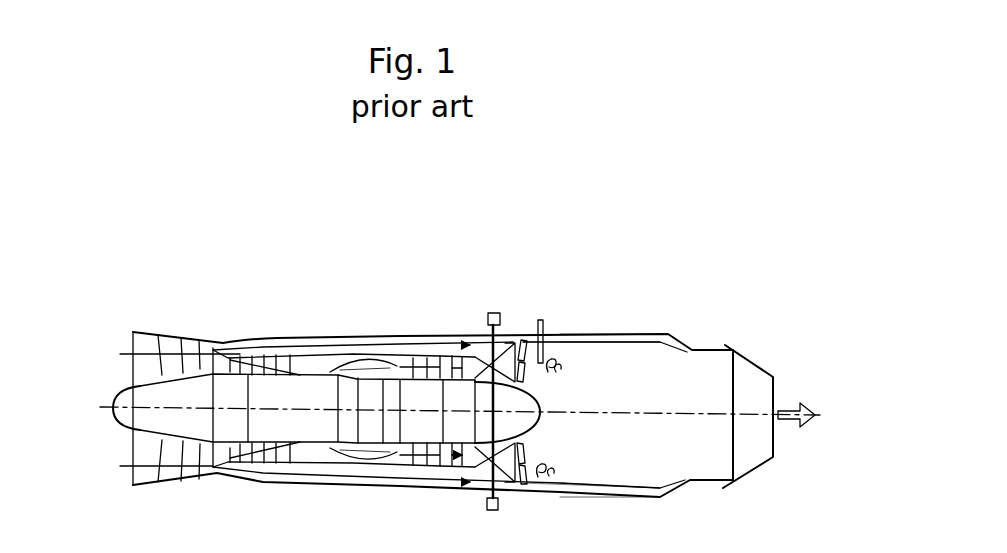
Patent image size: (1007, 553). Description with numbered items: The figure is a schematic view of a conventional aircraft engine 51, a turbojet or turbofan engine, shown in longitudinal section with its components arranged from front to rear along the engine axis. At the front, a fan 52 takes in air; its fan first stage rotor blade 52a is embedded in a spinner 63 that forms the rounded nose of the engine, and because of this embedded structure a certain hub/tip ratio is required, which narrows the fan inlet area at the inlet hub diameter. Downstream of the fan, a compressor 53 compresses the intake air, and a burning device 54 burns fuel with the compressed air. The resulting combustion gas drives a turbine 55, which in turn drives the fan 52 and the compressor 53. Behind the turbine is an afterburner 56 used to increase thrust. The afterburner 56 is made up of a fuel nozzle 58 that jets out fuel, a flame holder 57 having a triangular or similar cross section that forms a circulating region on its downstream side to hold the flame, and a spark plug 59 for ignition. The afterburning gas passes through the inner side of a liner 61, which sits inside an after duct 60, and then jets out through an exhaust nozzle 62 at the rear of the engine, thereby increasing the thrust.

The aircraft engine 51 is at (393, 262).
The fan 52 is at (188, 350).
The fan first stage rotor blade 52a is at (163, 340).
The compressor 53 is at (282, 365).
The burning device 54 is at (366, 355).
The turbine 55 is at (435, 358).
The afterburner 56 is at (722, 264).
The flame holder 57 is at (524, 336).
The fuel nozzle 58 is at (493, 310).
The spark plug 59 is at (542, 322).
The after duct 60 is at (646, 330).
The liner 61 is at (628, 348).
The exhaust nozzle 62 is at (766, 364).
The spinner 63 is at (130, 400).